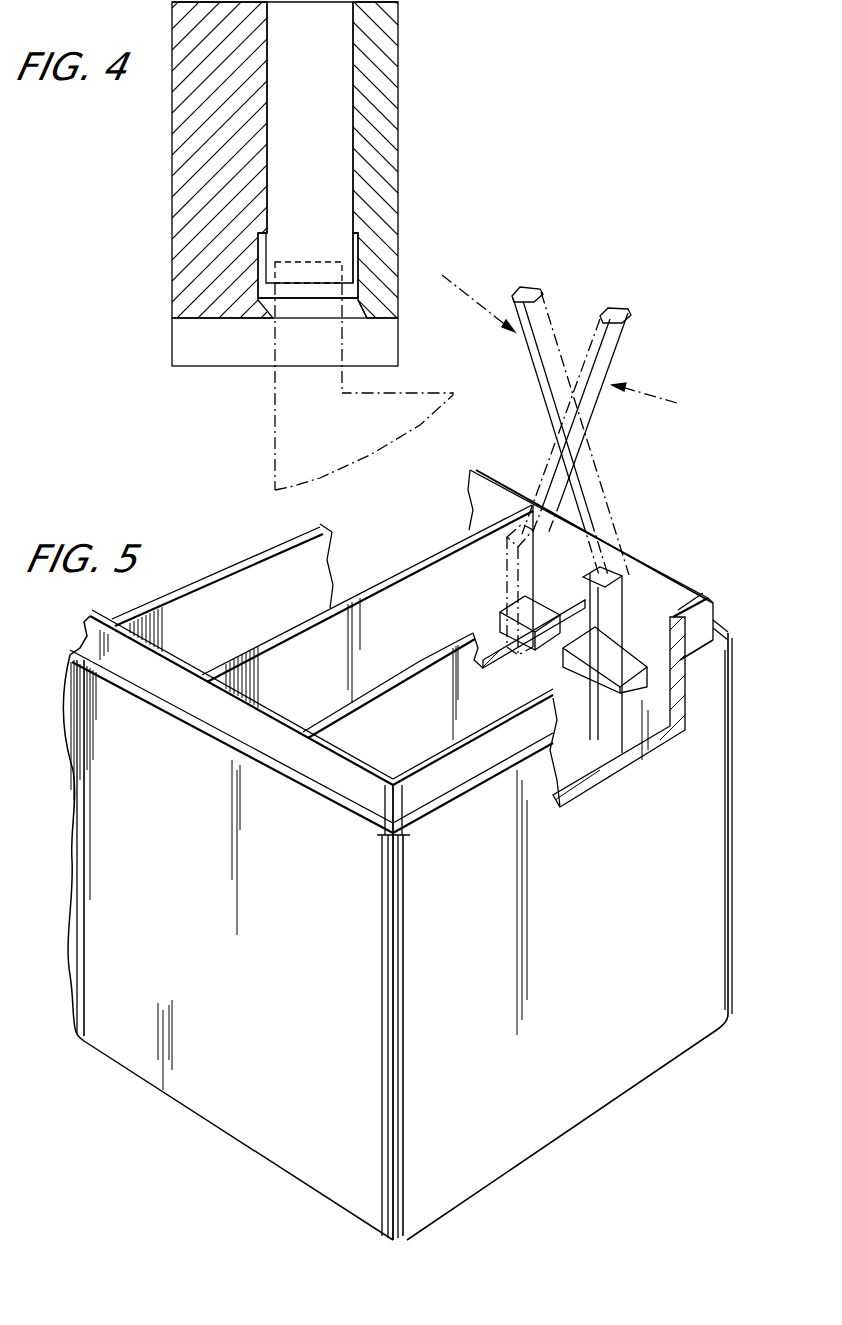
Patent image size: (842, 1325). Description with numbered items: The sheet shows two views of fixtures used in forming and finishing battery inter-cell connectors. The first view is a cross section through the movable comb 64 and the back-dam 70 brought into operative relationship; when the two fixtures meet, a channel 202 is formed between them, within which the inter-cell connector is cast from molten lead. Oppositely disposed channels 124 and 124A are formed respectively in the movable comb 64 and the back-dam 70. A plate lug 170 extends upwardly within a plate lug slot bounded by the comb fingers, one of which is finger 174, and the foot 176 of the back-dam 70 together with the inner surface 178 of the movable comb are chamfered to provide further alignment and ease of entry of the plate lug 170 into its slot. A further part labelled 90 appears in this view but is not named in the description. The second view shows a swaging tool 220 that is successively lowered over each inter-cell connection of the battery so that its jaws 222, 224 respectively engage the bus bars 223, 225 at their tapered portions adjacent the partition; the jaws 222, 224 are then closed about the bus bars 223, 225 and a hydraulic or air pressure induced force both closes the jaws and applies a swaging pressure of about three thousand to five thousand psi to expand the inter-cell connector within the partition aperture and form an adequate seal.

In FIG. 4, the movable comb 64 is at (172, 204).
In FIG. 4, the back-dam 70 is at (406, 57).
In FIG. 4, the bottom wall of channel 90 is at (302, 292).
In FIG. 4, the channel 124 is at (267, 250).
In FIG. 4, the channel 124A is at (355, 243).
In FIG. 4, the plate lug 170 is at (320, 282).
In FIG. 4, the finger 174 is at (234, 351).
In FIG. 4, the foot of back-dam 176 is at (362, 312).
In FIG. 4, the inner surface of movable comb 178 is at (273, 314).
In FIG. 4, the channel 202 is at (318, 150).
In FIG. 5, the swaging tool 220 is at (593, 446).
In FIG. 5, the swaging tool jaw 222 is at (503, 577).
In FIG. 5, the bus bar 223 is at (500, 613).
In FIG. 5, the swaging tool jaw 224 is at (647, 597).
In FIG. 5, the bus bar 225 is at (577, 667).